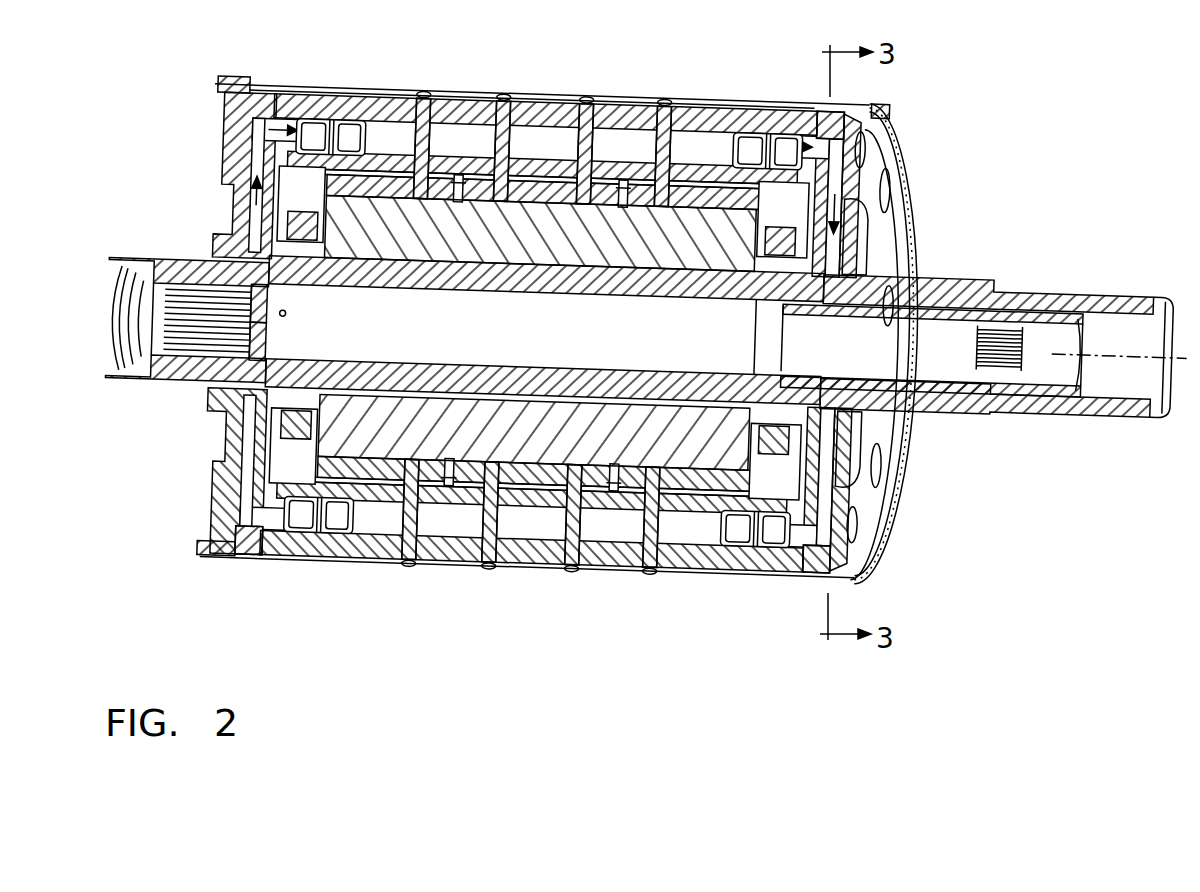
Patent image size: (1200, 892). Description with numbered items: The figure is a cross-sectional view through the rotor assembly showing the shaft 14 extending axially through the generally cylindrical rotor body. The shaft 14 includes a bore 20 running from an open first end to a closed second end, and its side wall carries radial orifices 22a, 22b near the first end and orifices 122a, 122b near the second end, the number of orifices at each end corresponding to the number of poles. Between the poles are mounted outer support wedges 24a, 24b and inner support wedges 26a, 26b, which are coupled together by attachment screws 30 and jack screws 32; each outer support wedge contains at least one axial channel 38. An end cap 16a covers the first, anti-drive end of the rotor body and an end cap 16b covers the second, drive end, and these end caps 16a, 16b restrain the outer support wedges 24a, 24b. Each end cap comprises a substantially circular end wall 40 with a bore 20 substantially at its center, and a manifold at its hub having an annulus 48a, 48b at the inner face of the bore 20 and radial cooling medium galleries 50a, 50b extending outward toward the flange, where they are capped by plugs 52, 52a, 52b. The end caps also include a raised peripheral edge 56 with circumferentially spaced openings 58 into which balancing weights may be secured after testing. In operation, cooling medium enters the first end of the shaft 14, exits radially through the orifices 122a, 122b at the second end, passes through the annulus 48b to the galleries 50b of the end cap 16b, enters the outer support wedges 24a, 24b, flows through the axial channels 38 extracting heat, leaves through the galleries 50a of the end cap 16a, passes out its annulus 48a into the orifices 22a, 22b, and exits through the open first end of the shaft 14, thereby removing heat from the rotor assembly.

The shaft 14 is at (233, 261).
The end cap 16a is at (900, 534).
The end cap 16b is at (238, 86).
The bore 20 is at (493, 337).
The orifice 22a is at (838, 301).
The orifice 22b is at (841, 386).
The outer support wedge 24a is at (750, 98).
The outer support wedge 24b is at (729, 567).
The inner support wedge 26a is at (556, 190).
The inner support wedge 26b is at (649, 470).
The attachment screw 30 is at (503, 92).
The jack screw 32 is at (463, 192).
The axial channel 38 is at (701, 110).
The end wall 40 is at (226, 129).
The annulus 48a is at (852, 258).
The annulus 48b is at (846, 440).
The cooling medium gallery 50a is at (258, 221).
The cooling medium gallery 50b is at (838, 498).
The plug 52 is at (258, 553).
The plug 52a is at (830, 100).
The plug 52b is at (830, 580).
The raised peripheral edge 56 is at (214, 87).
The circumferentially spaced opening 58 is at (910, 141).
The orifice 122a is at (284, 283).
The orifice 122b is at (283, 355).